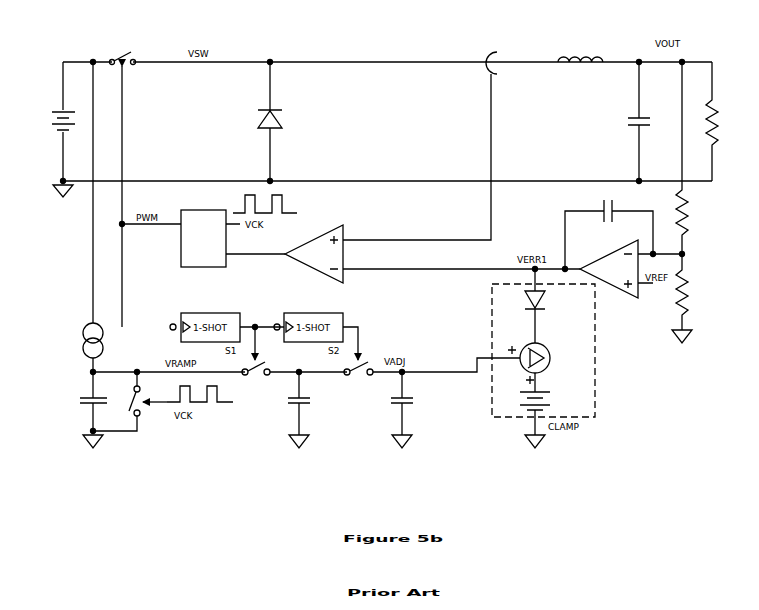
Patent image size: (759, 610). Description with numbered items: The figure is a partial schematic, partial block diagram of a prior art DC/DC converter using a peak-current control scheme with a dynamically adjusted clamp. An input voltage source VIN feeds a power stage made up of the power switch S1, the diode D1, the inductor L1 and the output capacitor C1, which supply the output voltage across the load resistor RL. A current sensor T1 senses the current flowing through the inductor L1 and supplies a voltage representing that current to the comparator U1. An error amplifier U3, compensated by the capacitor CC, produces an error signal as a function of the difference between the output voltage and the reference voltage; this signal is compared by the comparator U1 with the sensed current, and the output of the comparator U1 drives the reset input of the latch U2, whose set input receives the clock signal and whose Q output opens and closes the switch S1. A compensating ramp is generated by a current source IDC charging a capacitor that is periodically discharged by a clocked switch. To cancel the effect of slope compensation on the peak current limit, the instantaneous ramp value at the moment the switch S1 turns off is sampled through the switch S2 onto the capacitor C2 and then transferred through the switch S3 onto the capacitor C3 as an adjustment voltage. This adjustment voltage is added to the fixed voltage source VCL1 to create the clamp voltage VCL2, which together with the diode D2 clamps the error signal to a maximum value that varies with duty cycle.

The input voltage source VIN is at (53, 121).
The power switch S1 is at (123, 183).
The diode D1 is at (261, 122).
The current sensor T1 is at (420, 139).
The inductor L1 is at (580, 67).
The output capacitor C1 is at (646, 122).
The load resistor RL is at (724, 121).
The latch U2 is at (203, 241).
The comparator U1 is at (432, 254).
The compensation capacitor CC is at (609, 228).
The error amplifier U3 is at (631, 266).
The current source IDC is at (80, 347).
The switch S2 is at (256, 375).
The capacitor C2 is at (306, 409).
The switch S3 is at (358, 375).
The capacitor C3 is at (409, 409).
The diode D2 is at (544, 306).
The clamp voltage VCL2 is at (539, 322).
The voltage source VCL1 is at (550, 410).